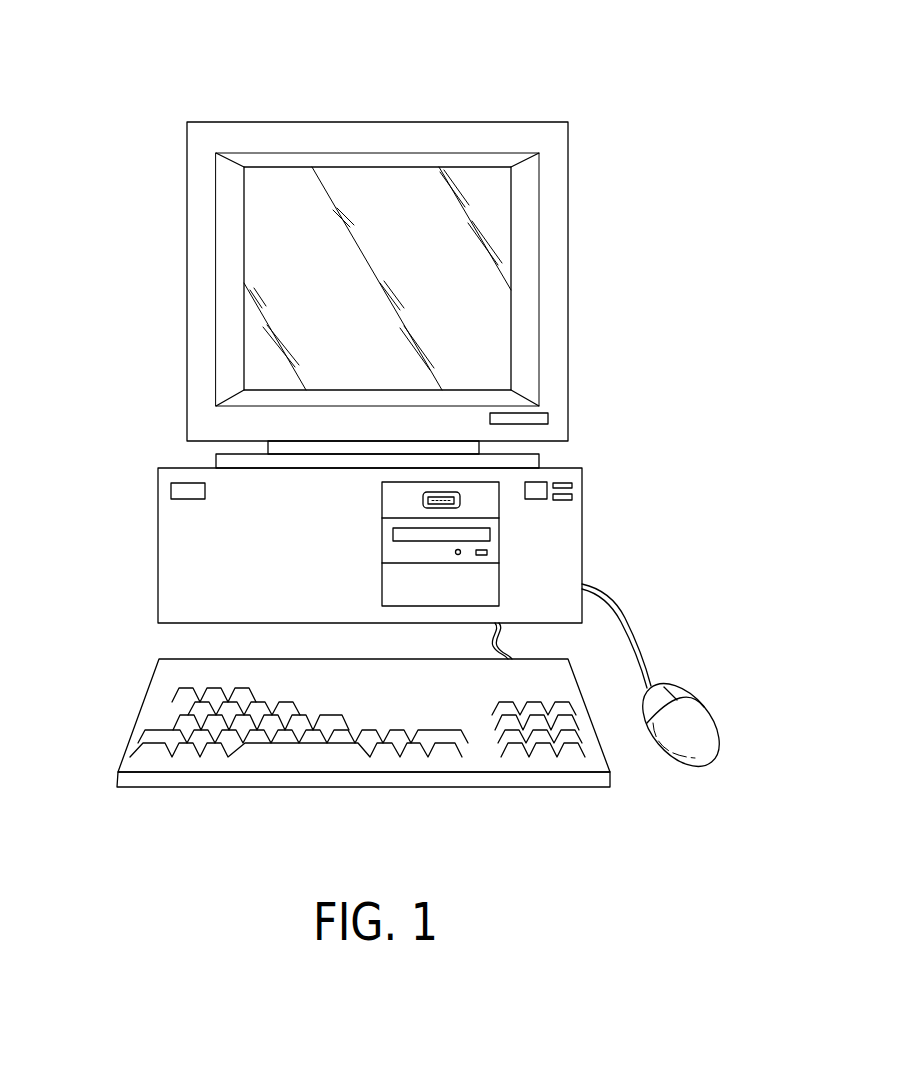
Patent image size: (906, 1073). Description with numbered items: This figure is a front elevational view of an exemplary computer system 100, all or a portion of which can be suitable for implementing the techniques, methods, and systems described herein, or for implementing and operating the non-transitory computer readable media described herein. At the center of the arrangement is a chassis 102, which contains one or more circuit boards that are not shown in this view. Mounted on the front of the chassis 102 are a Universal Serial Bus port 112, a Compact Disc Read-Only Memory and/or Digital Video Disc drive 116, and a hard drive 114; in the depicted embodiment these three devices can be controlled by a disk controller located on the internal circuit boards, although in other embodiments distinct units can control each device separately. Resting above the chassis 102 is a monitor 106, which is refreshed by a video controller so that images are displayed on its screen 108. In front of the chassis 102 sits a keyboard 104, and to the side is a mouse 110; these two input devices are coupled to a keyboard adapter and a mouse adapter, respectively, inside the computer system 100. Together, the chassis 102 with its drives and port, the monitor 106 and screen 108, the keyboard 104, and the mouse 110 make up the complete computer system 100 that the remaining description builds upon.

The computer system 100 is at (560, 97).
The chassis 102 is at (158, 545).
The keyboard 104 is at (143, 710).
The monitor 106 is at (263, 122).
The screen 108 is at (292, 283).
The mouse 110 is at (700, 715).
The Universal Serial Bus (USB) port 112 is at (462, 496).
The hard drive 114 is at (492, 583).
The CD-ROM and/or DVD drive 116 is at (493, 541).